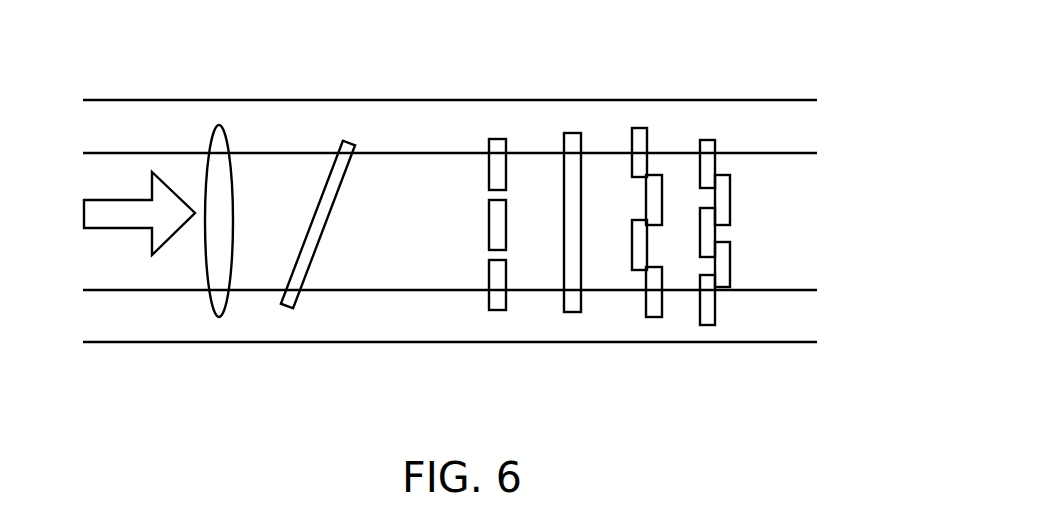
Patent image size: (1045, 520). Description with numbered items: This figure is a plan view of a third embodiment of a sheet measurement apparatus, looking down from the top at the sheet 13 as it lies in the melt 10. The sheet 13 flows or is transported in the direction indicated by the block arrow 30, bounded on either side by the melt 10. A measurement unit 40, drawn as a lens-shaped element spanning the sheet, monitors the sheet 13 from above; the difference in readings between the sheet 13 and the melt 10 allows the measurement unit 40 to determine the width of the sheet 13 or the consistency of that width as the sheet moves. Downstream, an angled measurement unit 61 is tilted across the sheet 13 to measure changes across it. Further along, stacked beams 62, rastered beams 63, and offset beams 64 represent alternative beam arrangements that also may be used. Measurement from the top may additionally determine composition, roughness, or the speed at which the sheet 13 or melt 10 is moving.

The melt 10 is at (444, 125).
The sheet 13 is at (452, 218).
The direction of sheet travel 30 is at (139, 223).
The measurement unit 40 is at (242, 113).
The angled measurement unit 61 is at (348, 110).
The stacked beams 62 is at (510, 104).
The rastered beams 63 is at (584, 104).
The offset beams 64 is at (663, 100).